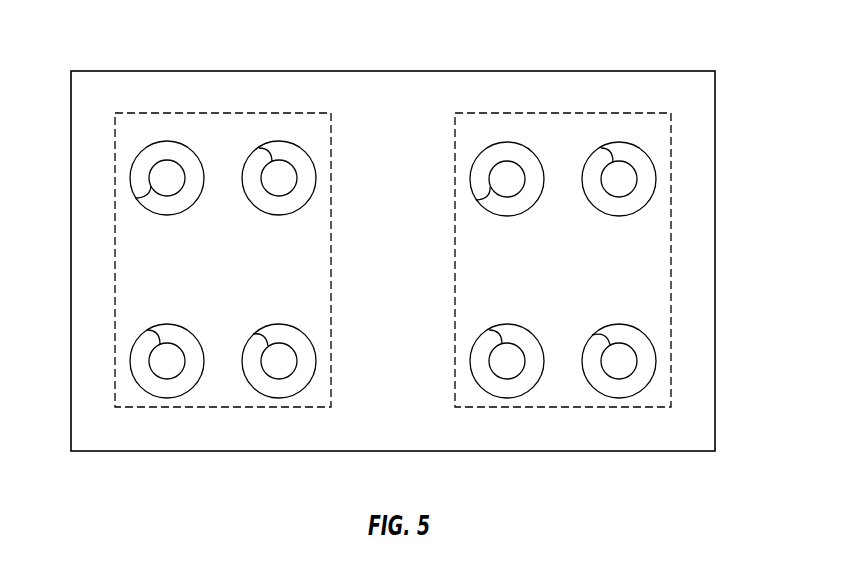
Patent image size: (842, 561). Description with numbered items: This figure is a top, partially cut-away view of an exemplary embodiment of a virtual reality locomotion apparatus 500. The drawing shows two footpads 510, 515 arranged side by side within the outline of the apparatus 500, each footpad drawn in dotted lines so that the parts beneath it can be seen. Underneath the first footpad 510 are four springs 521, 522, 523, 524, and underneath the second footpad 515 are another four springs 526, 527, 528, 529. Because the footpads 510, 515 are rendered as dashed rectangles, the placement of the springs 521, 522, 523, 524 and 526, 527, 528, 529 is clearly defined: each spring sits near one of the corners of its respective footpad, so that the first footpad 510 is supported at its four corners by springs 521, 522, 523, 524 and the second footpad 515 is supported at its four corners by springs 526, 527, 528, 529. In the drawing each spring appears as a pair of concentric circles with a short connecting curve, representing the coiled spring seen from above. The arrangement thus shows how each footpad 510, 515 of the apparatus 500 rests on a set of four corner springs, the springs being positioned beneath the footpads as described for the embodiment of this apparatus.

The substrate / fluid ejection device 500 is at (600, 43).
The footpad 510 is at (213, 113).
The footpad 515 is at (570, 113).
The spring 521 is at (138, 169).
The spring 522 is at (307, 169).
The spring 523 is at (138, 361).
The spring 524 is at (307, 361).
The spring 526 is at (476, 172).
The spring 527 is at (647, 191).
The spring 528 is at (476, 373).
The spring 529 is at (645, 372).